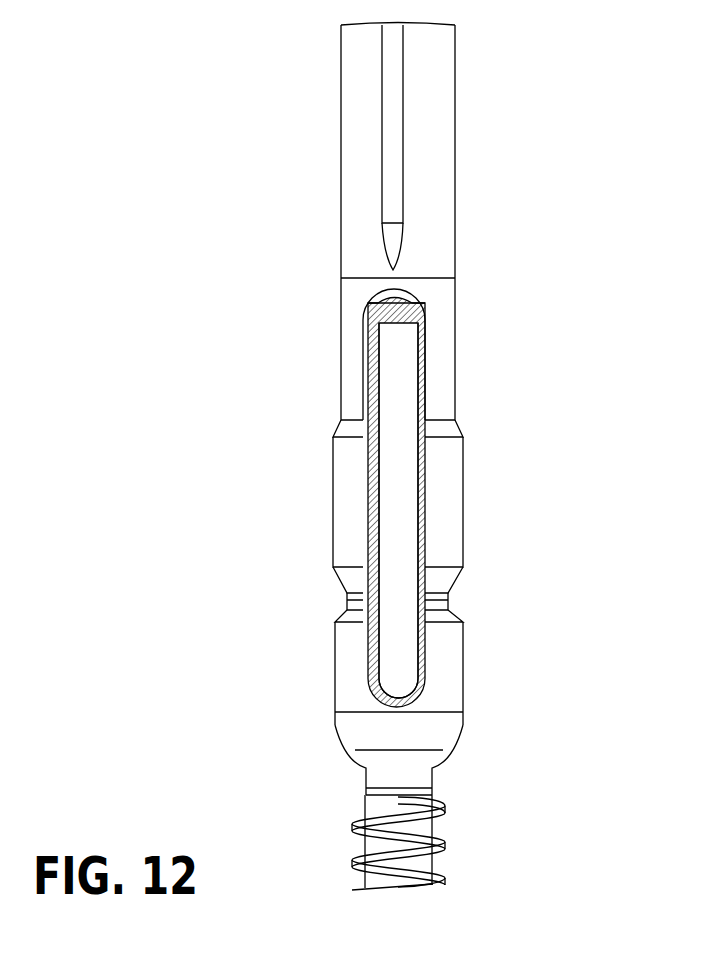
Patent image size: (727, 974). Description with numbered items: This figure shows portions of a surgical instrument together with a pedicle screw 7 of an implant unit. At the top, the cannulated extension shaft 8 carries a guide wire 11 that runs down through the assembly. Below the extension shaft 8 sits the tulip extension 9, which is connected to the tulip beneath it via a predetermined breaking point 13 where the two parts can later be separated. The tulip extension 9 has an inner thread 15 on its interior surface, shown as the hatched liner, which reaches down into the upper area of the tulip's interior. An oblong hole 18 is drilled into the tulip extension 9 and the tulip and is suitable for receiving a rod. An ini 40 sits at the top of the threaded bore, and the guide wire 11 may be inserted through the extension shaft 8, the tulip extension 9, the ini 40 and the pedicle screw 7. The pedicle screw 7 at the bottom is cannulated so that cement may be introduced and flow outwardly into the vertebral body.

The pedicle screw 7 is at (447, 815).
The extension shaft 8 is at (437, 190).
The tulip extension 9 is at (447, 543).
The guide wire 11 is at (394, 130).
The predetermined breaking point 13 is at (458, 595).
The inner thread 15 is at (368, 484).
The oblong hole 18 is at (392, 503).
The ini 40 is at (425, 303).